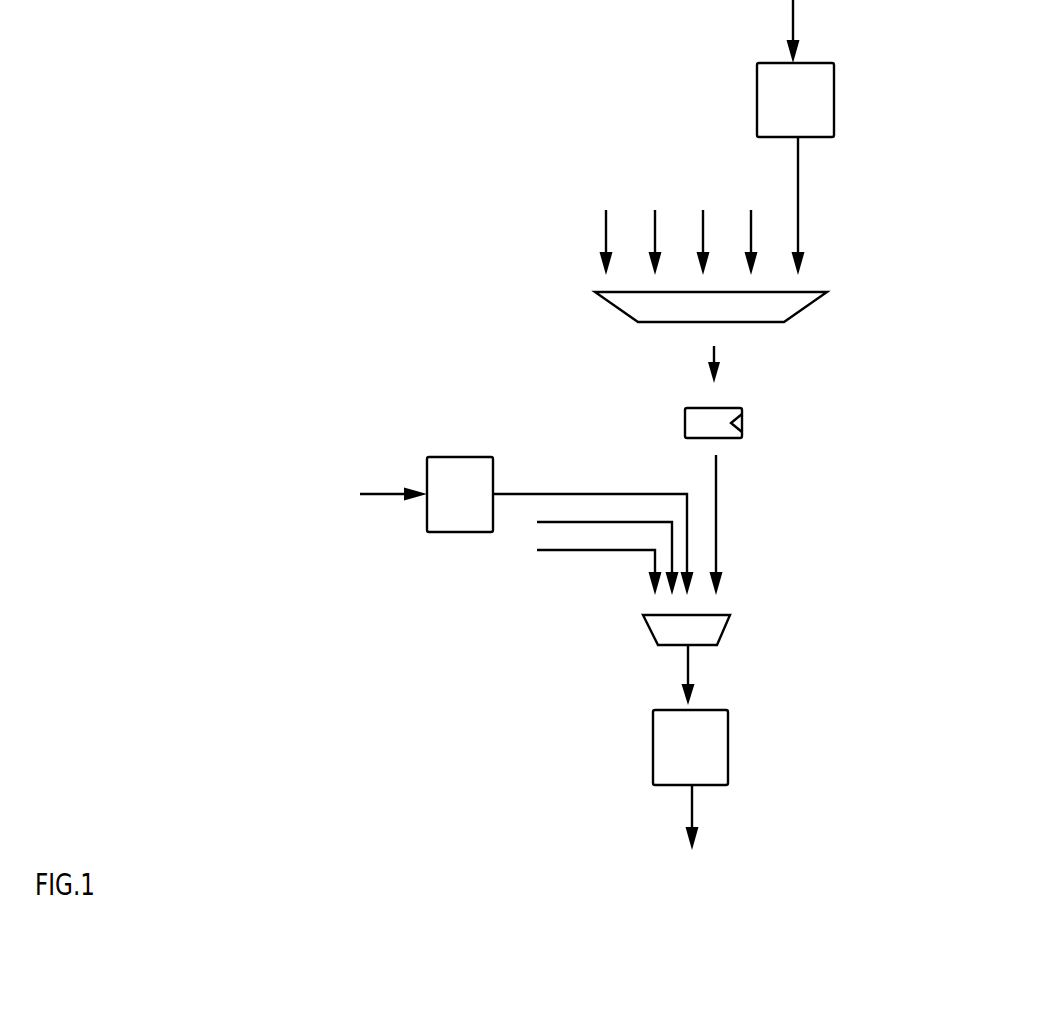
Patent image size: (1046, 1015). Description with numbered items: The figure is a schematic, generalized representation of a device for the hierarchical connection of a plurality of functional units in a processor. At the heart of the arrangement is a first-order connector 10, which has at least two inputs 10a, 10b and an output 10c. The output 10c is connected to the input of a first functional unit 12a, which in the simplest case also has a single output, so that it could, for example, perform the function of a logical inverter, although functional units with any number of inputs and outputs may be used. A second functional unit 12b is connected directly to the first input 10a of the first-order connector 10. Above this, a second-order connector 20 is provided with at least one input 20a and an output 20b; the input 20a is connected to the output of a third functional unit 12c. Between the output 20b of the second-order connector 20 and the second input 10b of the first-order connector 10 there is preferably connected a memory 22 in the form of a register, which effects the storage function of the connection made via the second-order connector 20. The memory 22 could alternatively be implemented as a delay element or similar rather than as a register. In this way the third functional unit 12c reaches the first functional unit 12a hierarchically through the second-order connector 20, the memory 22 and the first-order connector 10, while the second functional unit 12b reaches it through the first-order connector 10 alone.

The first-order connector 10 is at (730, 628).
The first input of the first-order connector 10a is at (590, 493).
The second input of the first-order connector 10b is at (716, 512).
The output of the first-order connector 10c is at (688, 663).
The first functional unit 12a is at (728, 747).
The second functional unit 12b is at (460, 457).
The third functional unit 12c is at (834, 100).
The second-order connector 20 is at (807, 307).
The input of the second-order connector 20a is at (798, 193).
The output of the second-order connector 20b is at (718, 356).
The memory 22 is at (742, 430).